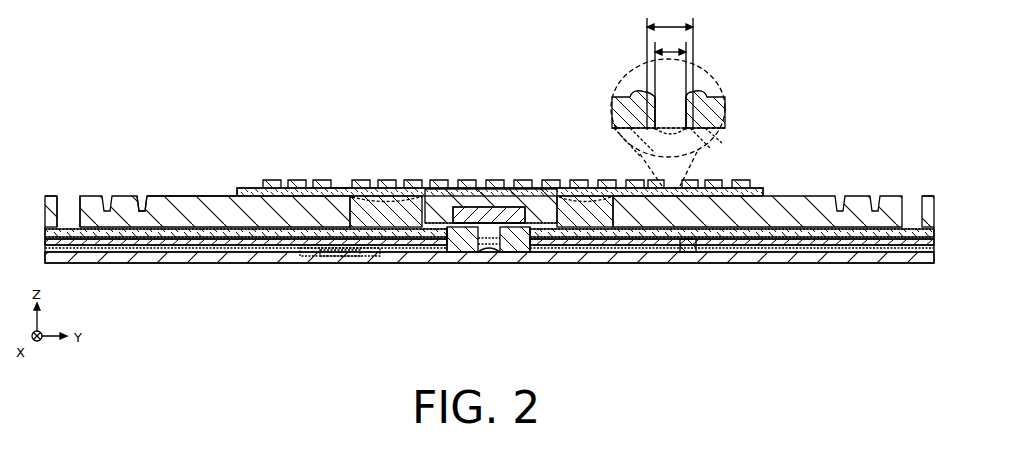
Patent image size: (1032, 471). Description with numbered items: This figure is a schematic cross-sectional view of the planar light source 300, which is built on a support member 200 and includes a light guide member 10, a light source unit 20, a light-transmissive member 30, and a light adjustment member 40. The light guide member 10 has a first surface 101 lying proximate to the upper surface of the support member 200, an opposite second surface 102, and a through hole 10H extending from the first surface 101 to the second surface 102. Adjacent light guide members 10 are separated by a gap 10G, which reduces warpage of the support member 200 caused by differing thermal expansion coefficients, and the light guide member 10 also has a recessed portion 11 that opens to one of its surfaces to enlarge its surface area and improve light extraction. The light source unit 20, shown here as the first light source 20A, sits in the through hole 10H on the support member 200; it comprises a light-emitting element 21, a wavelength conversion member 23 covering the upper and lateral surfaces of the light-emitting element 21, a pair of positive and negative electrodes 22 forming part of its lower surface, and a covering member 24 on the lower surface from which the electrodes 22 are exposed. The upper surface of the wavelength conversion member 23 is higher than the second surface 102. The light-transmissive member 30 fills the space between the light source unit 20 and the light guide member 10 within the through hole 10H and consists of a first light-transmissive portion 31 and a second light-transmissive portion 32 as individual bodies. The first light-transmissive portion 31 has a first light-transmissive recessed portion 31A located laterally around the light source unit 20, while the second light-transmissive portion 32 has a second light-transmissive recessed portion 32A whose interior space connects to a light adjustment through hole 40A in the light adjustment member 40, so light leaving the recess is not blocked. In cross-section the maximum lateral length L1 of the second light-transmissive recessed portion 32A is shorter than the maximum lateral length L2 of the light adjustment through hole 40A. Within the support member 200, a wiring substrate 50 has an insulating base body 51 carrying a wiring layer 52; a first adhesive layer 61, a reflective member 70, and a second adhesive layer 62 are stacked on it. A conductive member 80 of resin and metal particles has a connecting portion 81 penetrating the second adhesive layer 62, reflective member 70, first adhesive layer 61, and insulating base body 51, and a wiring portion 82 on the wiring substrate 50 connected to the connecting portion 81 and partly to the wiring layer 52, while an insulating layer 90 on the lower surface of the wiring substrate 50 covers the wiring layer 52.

The planar light source 300 is at (840, 50).
The support member 200 is at (848, 267).
The light guide member 10 is at (220, 210).
The gap 10G is at (67, 211).
The through hole 10H is at (590, 209).
The recessed portion 11 is at (141, 197).
The first surface 101 is at (175, 264).
The second surface 102 is at (183, 197).
The light source unit 20 is at (491, 164).
The first light source 20A is at (491, 149).
The light-emitting element 21 is at (487, 205).
The pair of positive and negative electrodes 22 is at (495, 210).
The wavelength conversion member 23 is at (470, 205).
The covering member 24 is at (530, 198).
The light-transmissive member 30 is at (500, 142).
The first light-transmissive portion 31 is at (368, 182).
The first light-transmissive recessed portion 31A is at (379, 197).
The second light-transmissive portion 32 is at (356, 190).
The second light-transmissive recessed portion 32A is at (672, 130).
The light adjustment member 40 is at (412, 190).
The light adjustment through hole 40A is at (668, 107).
The wiring substrate 50 is at (347, 292).
The insulating base body 51 is at (343, 264).
The wiring layer 52 is at (378, 264).
The first adhesive layer 61 is at (296, 264).
The second adhesive layer 62 is at (233, 264).
The reflective member 70 is at (268, 264).
The conductive member 80 is at (472, 285).
The connecting portion 81 is at (460, 264).
The wiring portion 82 is at (425, 264).
The insulating layer 90 is at (688, 264).
The maximum length of the second light-transmissive recessed portion L1 is at (670, 79).
The maximum length of the light adjustment through hole L2 is at (670, 67).